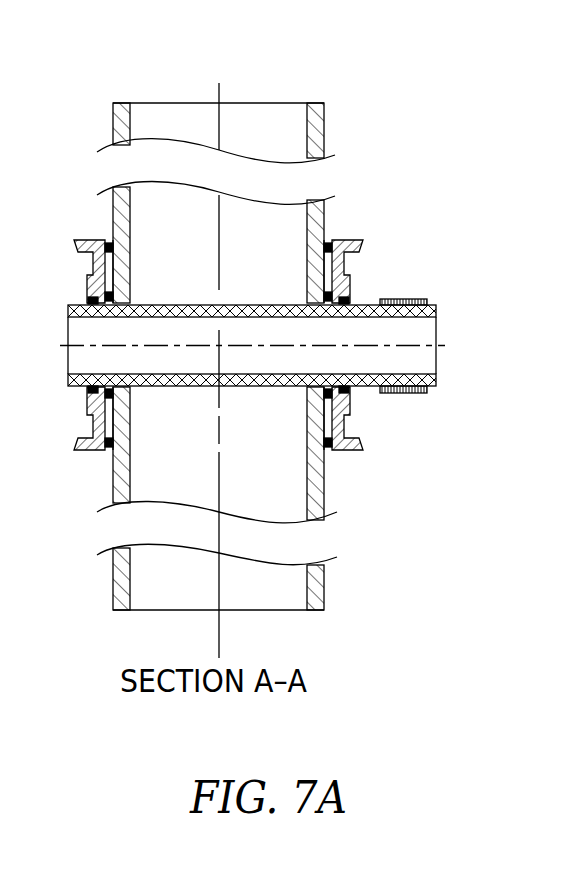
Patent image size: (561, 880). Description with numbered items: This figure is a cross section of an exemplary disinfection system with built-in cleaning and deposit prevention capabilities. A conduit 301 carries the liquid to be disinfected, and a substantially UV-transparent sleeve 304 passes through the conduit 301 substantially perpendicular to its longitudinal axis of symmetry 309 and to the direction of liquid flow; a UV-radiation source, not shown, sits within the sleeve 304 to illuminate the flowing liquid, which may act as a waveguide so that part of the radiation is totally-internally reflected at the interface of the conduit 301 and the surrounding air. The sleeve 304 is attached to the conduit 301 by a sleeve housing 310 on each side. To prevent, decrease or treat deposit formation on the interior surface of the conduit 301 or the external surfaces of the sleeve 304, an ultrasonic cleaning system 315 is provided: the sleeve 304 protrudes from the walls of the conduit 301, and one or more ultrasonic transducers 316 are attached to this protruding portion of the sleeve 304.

The conduit 301 is at (320, 103).
The UV-transparent sleeve 304 is at (437, 328).
The longitudinal axis of symmetry 309 is at (217, 596).
The sleeve housing 310 is at (347, 242).
The ultrasonic cleaning system 315 is at (450, 401).
The ultrasonic transducer 316 is at (403, 299).